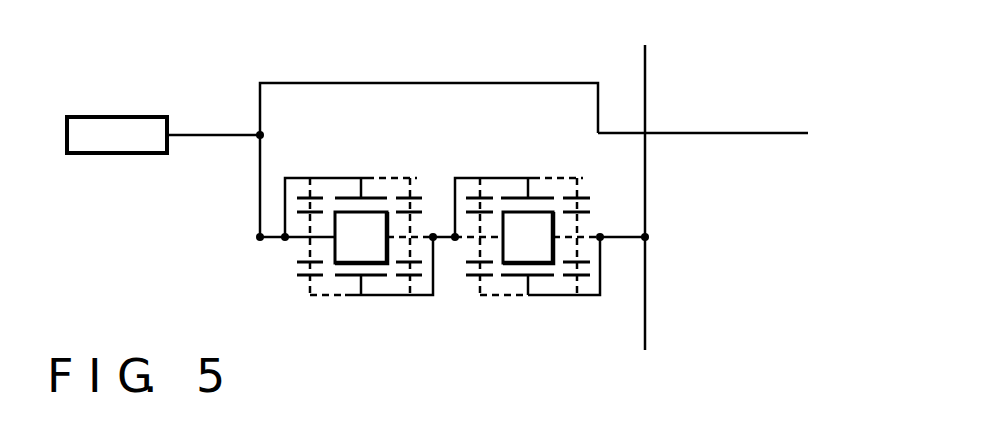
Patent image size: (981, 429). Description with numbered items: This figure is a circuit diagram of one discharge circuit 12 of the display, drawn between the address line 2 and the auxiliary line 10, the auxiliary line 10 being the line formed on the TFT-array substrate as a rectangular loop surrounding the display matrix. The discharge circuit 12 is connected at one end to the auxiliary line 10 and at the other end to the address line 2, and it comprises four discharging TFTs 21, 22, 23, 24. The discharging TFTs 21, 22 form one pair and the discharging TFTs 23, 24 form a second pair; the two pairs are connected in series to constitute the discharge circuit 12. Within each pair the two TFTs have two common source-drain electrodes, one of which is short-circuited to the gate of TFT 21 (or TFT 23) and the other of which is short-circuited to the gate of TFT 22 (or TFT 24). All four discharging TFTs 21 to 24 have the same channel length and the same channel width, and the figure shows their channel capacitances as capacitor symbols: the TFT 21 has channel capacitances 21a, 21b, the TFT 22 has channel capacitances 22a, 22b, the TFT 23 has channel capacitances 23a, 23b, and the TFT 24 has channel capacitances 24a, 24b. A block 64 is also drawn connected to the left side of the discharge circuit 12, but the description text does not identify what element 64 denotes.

The address line 2 is at (713, 134).
The auxiliary line 10 is at (648, 327).
The discharge circuit 12 is at (468, 83).
The discharging TFT 21 is at (349, 178).
The channel capacitance 21a is at (303, 178).
The channel capacitance 21b is at (413, 178).
The discharging TFT 22 is at (368, 285).
The channel capacitance 22a is at (298, 283).
The channel capacitance 22b is at (418, 283).
The discharging TFT 23 is at (510, 178).
The channel capacitance 23a is at (470, 178).
The channel capacitance 23b is at (578, 178).
The discharging TFT 24 is at (536, 283).
The channel capacitance 24a is at (473, 283).
The channel capacitance 24b is at (584, 283).
The signal source 64 is at (113, 153).